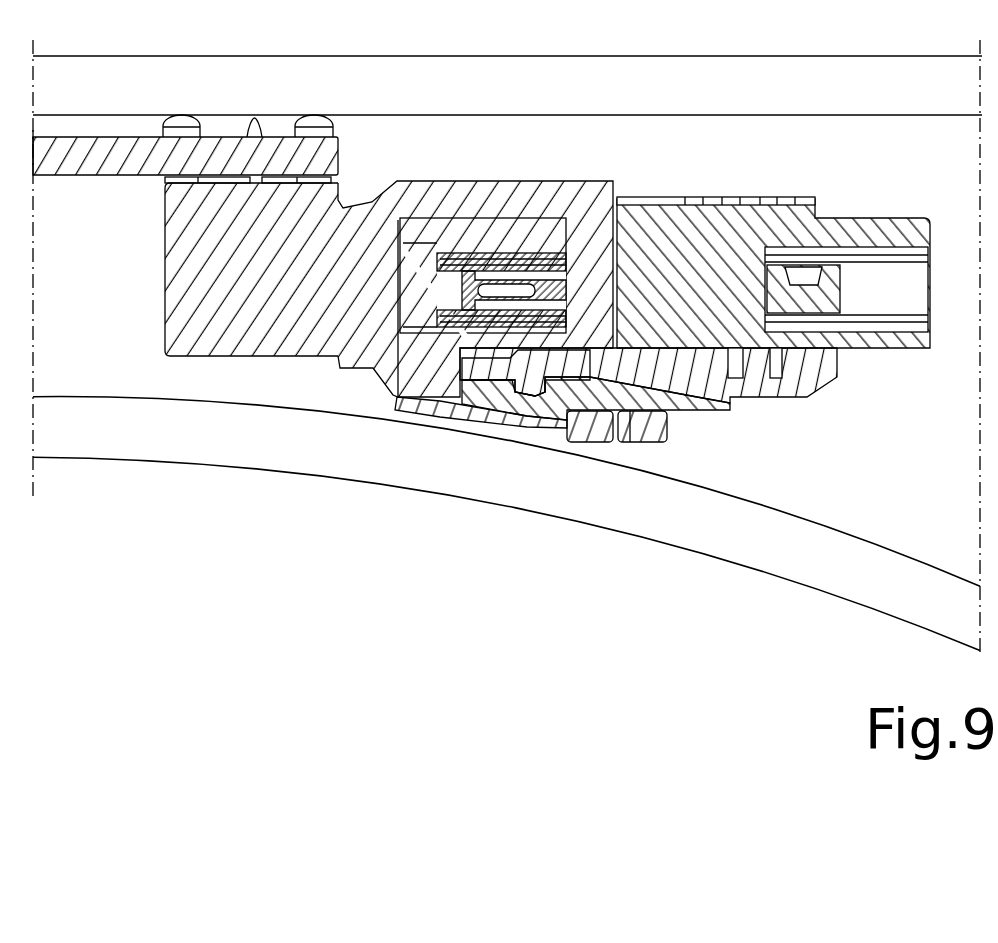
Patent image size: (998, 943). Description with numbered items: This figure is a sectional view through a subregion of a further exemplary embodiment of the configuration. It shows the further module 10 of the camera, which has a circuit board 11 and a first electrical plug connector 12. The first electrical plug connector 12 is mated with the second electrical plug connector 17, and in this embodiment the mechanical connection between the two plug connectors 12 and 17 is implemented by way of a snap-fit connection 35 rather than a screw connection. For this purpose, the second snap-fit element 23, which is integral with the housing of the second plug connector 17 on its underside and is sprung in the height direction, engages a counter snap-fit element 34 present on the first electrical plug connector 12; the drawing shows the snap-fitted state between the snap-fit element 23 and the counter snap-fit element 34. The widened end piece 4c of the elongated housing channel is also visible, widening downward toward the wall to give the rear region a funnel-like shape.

The widened end piece 4c is at (616, 543).
The further module 10 is at (189, 377).
The circuit board 11 is at (106, 152).
The first electrical plug connector 12 is at (336, 383).
The second electrical plug connector 17 is at (667, 218).
The second snap-fit element 23 is at (634, 412).
The counter snap-fit element 34 is at (594, 420).
The snap-fit connection 35 is at (548, 446).